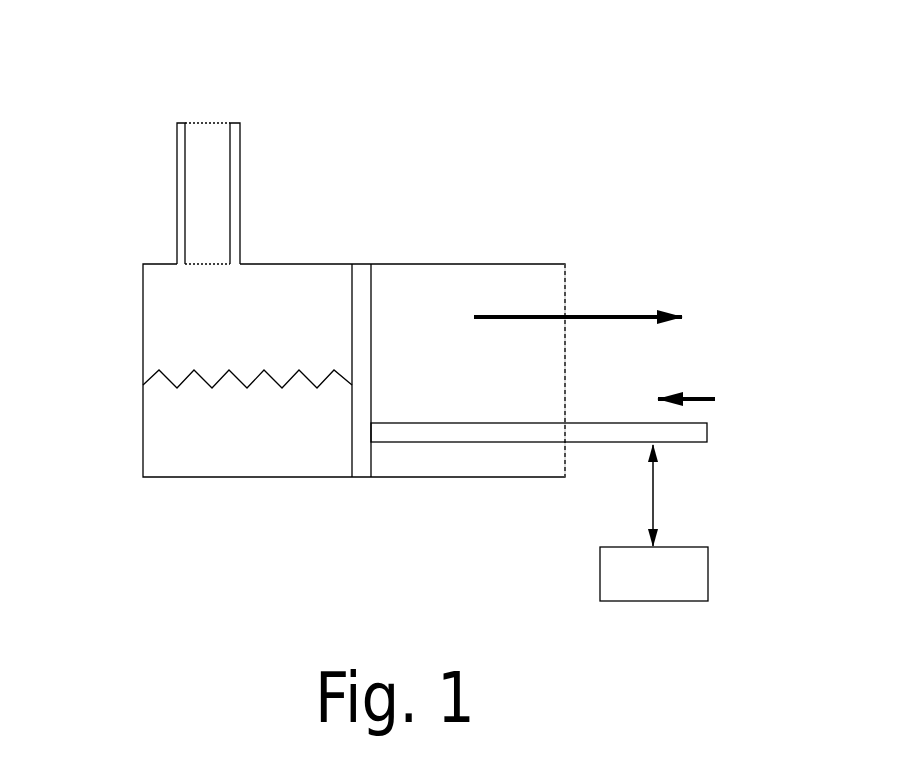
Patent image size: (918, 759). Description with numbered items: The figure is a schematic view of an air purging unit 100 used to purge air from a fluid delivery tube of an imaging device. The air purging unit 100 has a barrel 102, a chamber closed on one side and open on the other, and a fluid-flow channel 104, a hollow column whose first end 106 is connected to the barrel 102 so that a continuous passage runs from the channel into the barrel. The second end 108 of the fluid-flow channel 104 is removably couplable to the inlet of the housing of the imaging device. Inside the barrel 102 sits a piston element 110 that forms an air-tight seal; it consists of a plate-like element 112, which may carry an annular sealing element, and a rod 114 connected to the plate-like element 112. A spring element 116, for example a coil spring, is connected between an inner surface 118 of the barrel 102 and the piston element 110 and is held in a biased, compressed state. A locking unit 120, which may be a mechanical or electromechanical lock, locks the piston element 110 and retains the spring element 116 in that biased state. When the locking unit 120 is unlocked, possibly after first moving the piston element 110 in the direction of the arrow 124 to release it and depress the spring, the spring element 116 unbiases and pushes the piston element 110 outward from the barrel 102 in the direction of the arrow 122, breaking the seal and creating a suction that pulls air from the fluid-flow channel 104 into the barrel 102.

The air purging unit 100 is at (423, 320).
The barrel 102 is at (495, 263).
The fluid-flow channel 104 is at (240, 190).
The first end 106 is at (168, 253).
The second end 108 is at (158, 122).
The piston element 110 is at (473, 406).
The plate-like element 112 is at (351, 441).
The rod 114 is at (483, 441).
The spring element 116 is at (212, 388).
The inner surface 118 is at (148, 338).
The locking unit 120 is at (654, 523).
The arrow 122 is at (620, 317).
The arrow 124 is at (698, 399).